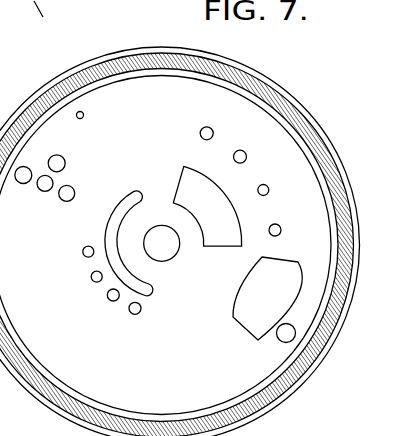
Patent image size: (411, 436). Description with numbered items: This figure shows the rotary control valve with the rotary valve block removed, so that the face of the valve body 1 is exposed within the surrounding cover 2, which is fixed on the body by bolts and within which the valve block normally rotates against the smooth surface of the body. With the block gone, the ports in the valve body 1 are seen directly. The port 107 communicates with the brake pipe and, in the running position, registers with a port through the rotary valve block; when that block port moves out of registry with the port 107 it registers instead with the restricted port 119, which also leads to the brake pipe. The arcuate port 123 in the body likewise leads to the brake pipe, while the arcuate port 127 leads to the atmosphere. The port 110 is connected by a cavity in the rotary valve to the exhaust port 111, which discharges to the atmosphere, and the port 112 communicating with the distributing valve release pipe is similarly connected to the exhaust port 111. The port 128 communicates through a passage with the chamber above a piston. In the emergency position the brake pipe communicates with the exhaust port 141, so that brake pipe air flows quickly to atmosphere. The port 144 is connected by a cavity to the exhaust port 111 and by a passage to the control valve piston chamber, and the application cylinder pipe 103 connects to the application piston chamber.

The valve body 1 is at (297, 163).
The cover 2 is at (293, 113).
The application cylinder pipe 103 is at (83, 113).
The port 107 is at (236, 319).
The port 110 is at (64, 159).
The exhaust port 111 is at (45, 192).
The port 112 is at (74, 190).
The restricted port 119 is at (268, 192).
The arcuate port 123 is at (182, 168).
The arcuate port 127 is at (151, 288).
The port 128 is at (93, 281).
The exhaust port 141 is at (279, 340).
The port 144 is at (21, 184).